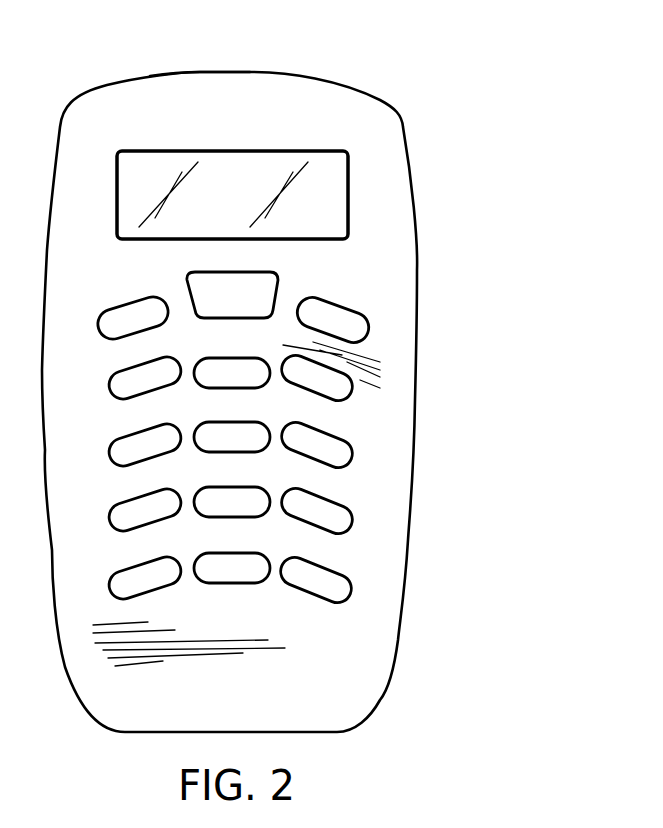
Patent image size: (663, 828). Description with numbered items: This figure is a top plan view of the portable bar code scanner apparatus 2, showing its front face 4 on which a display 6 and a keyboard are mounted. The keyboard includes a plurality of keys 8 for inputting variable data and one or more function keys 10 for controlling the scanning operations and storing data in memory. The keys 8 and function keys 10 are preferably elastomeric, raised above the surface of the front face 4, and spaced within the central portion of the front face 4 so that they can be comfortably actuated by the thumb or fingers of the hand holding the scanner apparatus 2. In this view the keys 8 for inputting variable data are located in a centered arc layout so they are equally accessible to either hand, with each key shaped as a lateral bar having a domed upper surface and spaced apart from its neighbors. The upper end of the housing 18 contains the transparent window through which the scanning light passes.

The portable bar code scanner apparatus 2 is at (443, 567).
The front face 4 is at (352, 665).
The display 6 is at (325, 172).
The keys 8 is at (355, 393).
The function keys 10 is at (273, 275).
The housing 18 is at (200, 72).